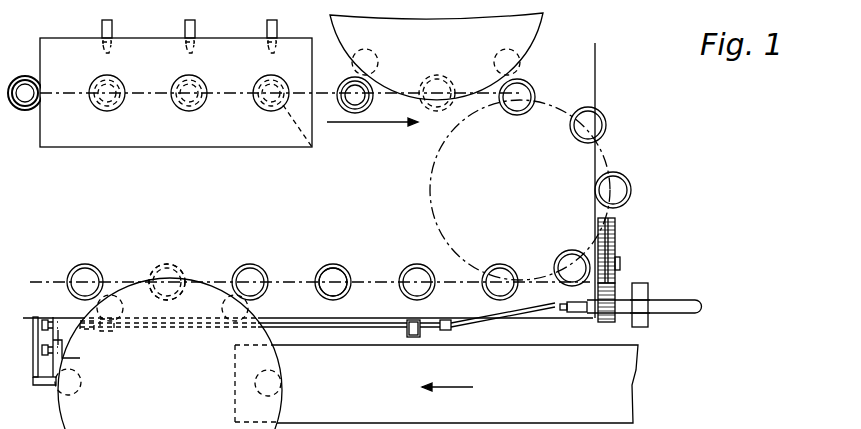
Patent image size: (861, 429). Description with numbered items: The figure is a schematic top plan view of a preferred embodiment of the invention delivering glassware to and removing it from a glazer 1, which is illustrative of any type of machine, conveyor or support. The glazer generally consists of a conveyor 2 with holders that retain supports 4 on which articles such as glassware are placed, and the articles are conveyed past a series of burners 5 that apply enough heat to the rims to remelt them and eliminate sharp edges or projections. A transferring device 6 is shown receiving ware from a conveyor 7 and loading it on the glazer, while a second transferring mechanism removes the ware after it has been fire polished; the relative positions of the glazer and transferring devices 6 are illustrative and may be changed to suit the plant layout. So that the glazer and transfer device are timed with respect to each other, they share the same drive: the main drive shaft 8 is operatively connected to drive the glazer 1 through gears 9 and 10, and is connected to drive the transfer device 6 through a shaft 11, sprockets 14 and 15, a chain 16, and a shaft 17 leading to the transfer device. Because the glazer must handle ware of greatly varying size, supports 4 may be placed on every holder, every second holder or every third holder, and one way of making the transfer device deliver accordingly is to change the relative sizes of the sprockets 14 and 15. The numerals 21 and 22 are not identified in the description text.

The glazer 1 is at (563, 162).
The conveyor 2 is at (292, 275).
The supports 4 is at (177, 273).
The burners 5 is at (185, 26).
The transferring device 6 is at (299, 221).
The conveyor 7 is at (436, 384).
The main drive shaft 8 is at (685, 298).
The gear 9 is at (617, 287).
The gear 10 is at (615, 230).
The shaft 11 is at (547, 310).
The sprocket 14 is at (45, 317).
The sprocket 15 is at (46, 358).
The chain 16 is at (40, 347).
The shaft 17 is at (62, 358).
The roller 21 is at (290, 375).
The rollers 22 is at (345, 113).